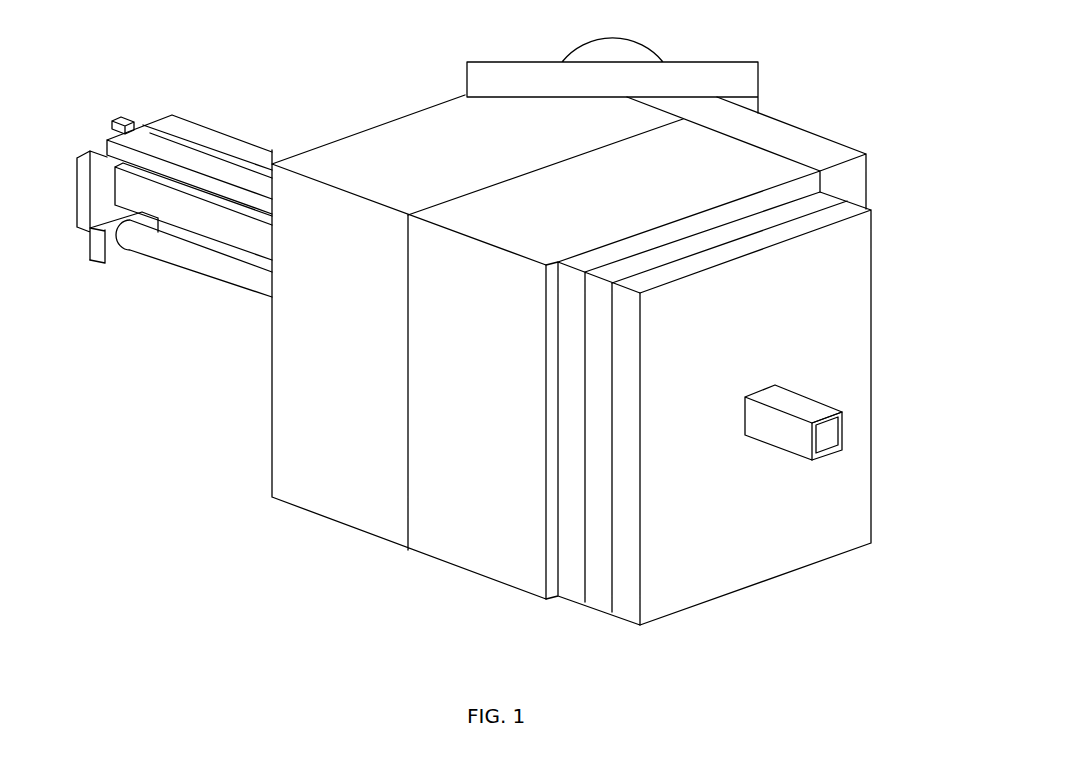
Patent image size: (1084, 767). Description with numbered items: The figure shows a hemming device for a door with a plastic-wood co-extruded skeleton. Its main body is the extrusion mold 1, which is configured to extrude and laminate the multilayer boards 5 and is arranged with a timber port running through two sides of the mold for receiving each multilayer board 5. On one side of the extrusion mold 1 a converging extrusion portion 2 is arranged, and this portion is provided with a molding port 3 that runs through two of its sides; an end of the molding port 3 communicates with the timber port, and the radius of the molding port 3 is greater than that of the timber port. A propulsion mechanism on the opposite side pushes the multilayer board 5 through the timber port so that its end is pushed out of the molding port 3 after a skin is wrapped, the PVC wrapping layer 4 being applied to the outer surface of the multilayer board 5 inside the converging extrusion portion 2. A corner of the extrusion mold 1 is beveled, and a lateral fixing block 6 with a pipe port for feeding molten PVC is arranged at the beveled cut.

The extrusion mold 1 is at (488, 523).
The converging extrusion portion 2 is at (672, 572).
The molding port 3 is at (752, 392).
The PVC wrapping layer 4 is at (805, 412).
The multilayer board 5 is at (827, 433).
The lateral fixing block 6 is at (695, 77).